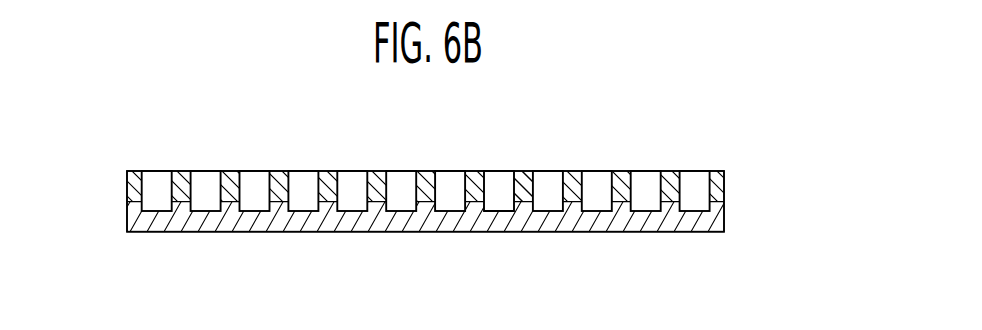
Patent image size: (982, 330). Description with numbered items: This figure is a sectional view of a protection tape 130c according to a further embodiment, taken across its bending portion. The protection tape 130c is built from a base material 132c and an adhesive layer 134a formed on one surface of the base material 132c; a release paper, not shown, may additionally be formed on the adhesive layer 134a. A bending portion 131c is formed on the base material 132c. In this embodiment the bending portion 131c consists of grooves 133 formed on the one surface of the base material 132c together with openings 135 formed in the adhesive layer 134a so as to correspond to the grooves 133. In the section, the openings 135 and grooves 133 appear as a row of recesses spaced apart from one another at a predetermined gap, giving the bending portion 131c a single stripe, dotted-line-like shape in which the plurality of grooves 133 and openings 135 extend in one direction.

The protection tape 130c is at (118, 133).
The bending portion 131c is at (596, 177).
The base material 132c is at (723, 220).
The grooves 133 is at (514, 210).
The adhesive layer 134a is at (723, 184).
The openings 135 is at (513, 192).